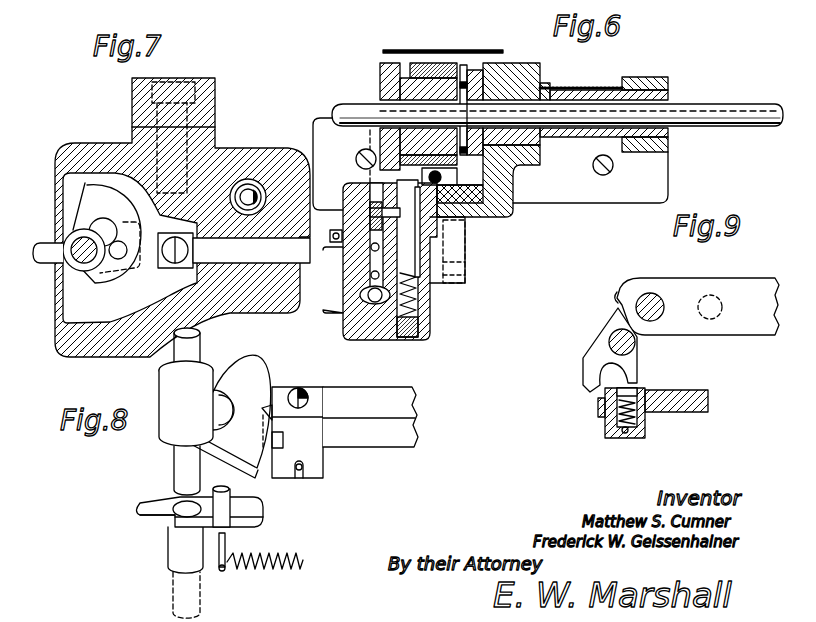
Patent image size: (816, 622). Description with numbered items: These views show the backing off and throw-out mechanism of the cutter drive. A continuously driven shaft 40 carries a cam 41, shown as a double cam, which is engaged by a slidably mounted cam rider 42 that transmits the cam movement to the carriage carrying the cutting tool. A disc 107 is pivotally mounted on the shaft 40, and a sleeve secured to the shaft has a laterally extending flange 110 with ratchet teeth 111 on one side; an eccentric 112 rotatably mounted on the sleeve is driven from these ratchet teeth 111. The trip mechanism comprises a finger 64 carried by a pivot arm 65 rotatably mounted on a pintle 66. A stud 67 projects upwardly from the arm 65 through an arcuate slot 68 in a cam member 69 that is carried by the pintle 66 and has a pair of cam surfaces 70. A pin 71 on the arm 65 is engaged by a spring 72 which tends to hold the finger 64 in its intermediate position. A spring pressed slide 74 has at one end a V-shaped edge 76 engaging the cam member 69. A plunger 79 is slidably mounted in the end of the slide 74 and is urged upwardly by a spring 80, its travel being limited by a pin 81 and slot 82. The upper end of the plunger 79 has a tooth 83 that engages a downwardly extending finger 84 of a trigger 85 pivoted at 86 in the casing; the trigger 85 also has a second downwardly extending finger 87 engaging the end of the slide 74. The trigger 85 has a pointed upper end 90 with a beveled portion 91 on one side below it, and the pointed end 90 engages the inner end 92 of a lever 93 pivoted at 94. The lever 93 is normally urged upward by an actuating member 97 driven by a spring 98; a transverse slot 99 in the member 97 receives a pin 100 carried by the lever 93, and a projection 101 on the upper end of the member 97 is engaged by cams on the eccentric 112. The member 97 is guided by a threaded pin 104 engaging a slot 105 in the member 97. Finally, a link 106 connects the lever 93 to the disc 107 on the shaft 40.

In FIG. 6, the shaft 40 is at (700, 103).
In FIG. 6, the cam 41 is at (493, 62).
In FIG. 6, the cam rider 42 is at (490, 114).
In FIG. 7, the finger 64 is at (45, 258).
In FIG. 8, the finger 64 is at (148, 506).
In FIG. 7, the pivot arm 65 is at (128, 225).
In FIG. 8, the pivot arm 65 is at (240, 510).
In FIG. 7, the pintle 66 is at (58, 275).
In FIG. 8, the pintle 66 is at (175, 455).
In FIG. 7, the stud 67 is at (116, 259).
In FIG. 8, the stud 67 is at (229, 497).
In FIG. 7, the arcuate slot 68 is at (103, 220).
In FIG. 8, the arcuate slot 68 is at (215, 395).
In FIG. 7, the cam member 69 is at (107, 233).
In FIG. 8, the cam member 69 is at (255, 366).
In FIG. 7, the cam surfaces 70 is at (100, 190).
In FIG. 8, the cam surfaces 70 is at (268, 378).
In FIG. 8, the pin 71 is at (231, 548).
In FIG. 8, the spring 72 is at (256, 566).
In FIG. 8, the spring pressed slide 74 is at (395, 400).
In FIG. 9, the spring pressed slide 74 is at (705, 392).
In FIG. 8, the V-shaped edge 76 is at (278, 403).
In FIG. 9, the V-shaped edge 76 is at (603, 410).
In FIG. 8, the plunger 79 is at (310, 395).
In FIG. 9, the plunger 79 is at (633, 392).
In FIG. 9, the spring 80 is at (642, 418).
In FIG. 9, the pin 81 is at (626, 434).
In FIG. 9, the slot 82 is at (640, 436).
In FIG. 8, the tooth 83 is at (303, 395).
In FIG. 9, the tooth 83 is at (608, 383).
In FIG. 9, the downwardly extending finger 84 is at (630, 385).
In FIG. 9, the trigger 85 is at (598, 355).
In FIG. 9, the pivot 86 is at (608, 340).
In FIG. 9, the downwardly extending finger 87 is at (600, 393).
In FIG. 9, the pointed portion 90 is at (615, 312).
In FIG. 9, the beveled portion 91 is at (618, 293).
In FIG. 9, the inner end 92 is at (621, 284).
In FIG. 6, the lever 93 is at (345, 207).
In FIG. 9, the lever 93 is at (720, 285).
In FIG. 9, the pivot 94 is at (660, 300).
In FIG. 6, the actuating member 97 is at (420, 270).
In FIG. 6, the spring 98 is at (418, 305).
In FIG. 6, the transverse slot 99 is at (465, 262).
In FIG. 6, the pin 100 is at (345, 215).
In FIG. 9, the pin 100 is at (720, 300).
In FIG. 7, the projection 101 is at (248, 197).
In FIG. 6, the projection 101 is at (378, 148).
In FIG. 6, the threaded pin 104 is at (440, 207).
In FIG. 6, the slot 105 is at (448, 186).
In FIG. 6, the link 106 is at (357, 165).
In FIG. 6, the disc 107 is at (378, 82).
In FIG. 6, the flange 110 is at (469, 85).
In FIG. 6, the ratchet teeth 111 is at (455, 117).
In FIG. 6, the eccentric 112 is at (452, 67).